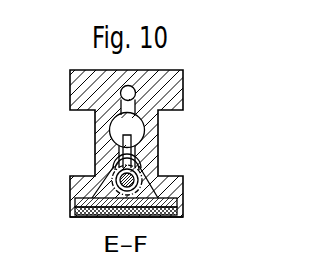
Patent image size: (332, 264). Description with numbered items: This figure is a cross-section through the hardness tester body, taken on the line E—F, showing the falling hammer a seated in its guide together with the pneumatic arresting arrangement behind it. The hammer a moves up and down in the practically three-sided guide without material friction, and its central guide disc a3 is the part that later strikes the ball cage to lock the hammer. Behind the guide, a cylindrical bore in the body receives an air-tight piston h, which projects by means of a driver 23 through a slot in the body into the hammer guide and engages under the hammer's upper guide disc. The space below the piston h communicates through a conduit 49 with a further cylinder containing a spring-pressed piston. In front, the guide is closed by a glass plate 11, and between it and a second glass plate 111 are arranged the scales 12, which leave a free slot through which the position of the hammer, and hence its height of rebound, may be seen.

The conduit 49 is at (124, 92).
The air-tight piston h is at (124, 128).
The driver 23 is at (121, 155).
The falling hammer a is at (133, 176).
The central guide disc a3 is at (141, 179).
The glass plate 11 is at (75, 200).
The second glass plate 111 is at (76, 216).
The scales 12 is at (173, 217).